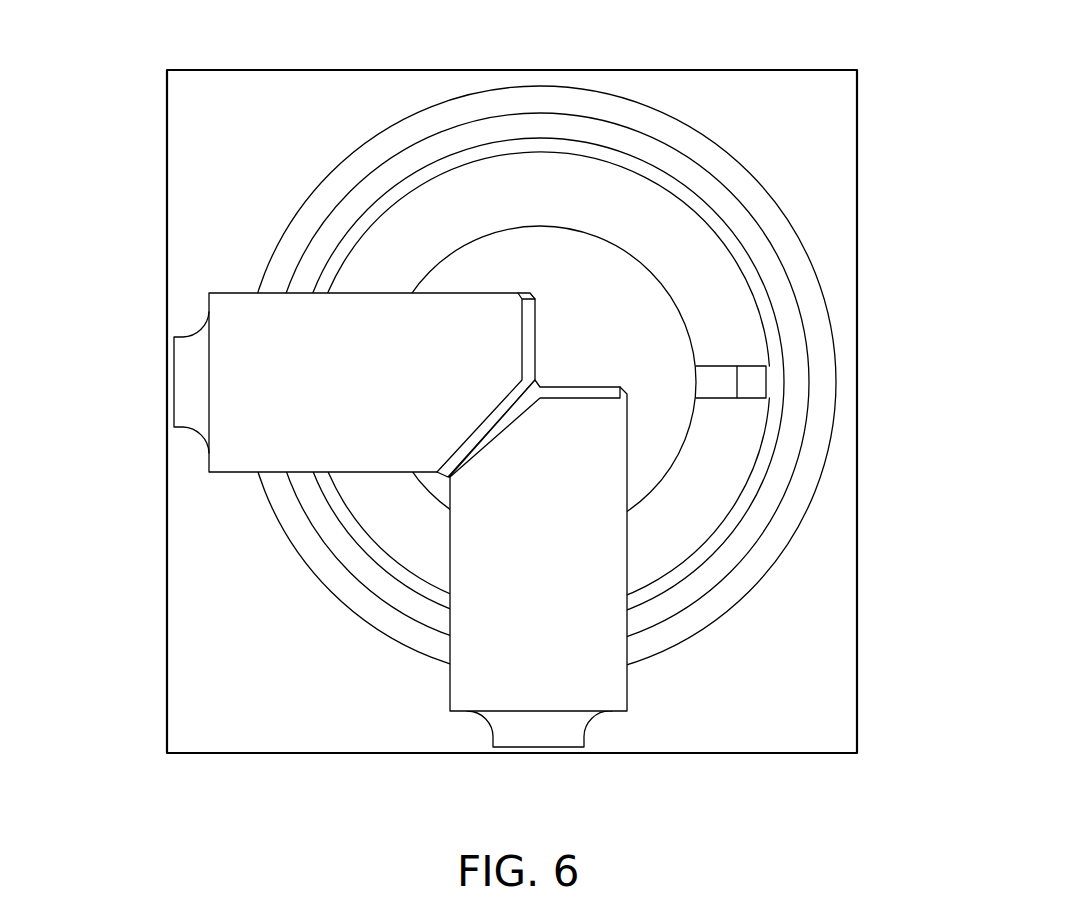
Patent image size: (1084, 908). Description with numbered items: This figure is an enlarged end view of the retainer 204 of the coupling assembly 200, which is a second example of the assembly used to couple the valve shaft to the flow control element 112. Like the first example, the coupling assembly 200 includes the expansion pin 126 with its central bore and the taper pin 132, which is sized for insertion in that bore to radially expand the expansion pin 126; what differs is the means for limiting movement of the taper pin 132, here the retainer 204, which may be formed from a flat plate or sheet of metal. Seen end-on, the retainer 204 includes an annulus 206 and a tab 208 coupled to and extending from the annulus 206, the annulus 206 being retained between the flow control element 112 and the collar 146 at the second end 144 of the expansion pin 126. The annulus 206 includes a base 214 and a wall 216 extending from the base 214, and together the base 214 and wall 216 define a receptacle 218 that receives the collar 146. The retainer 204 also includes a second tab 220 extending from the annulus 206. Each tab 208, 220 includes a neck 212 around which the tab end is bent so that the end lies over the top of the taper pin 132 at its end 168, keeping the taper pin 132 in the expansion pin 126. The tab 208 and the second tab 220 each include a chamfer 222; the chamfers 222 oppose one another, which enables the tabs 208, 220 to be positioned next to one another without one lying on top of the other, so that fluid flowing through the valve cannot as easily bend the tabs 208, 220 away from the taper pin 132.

The coupling assembly 200 is at (146, 255).
The flow control element 112 is at (703, 728).
The expansion pin 126 is at (422, 217).
The taper pin 132 is at (643, 217).
The second end 144 is at (567, 201).
The collar 146 is at (737, 298).
The end 168 is at (630, 353).
The retainer 204 is at (340, 577).
The annulus 206 is at (773, 540).
The tab 208 is at (617, 437).
The neck 212 is at (192, 385).
The base 214 is at (773, 427).
The wall 216 is at (825, 380).
The receptacle 218 is at (737, 250).
The second tab 220 is at (509, 350).
The chamfer 222 is at (475, 423).